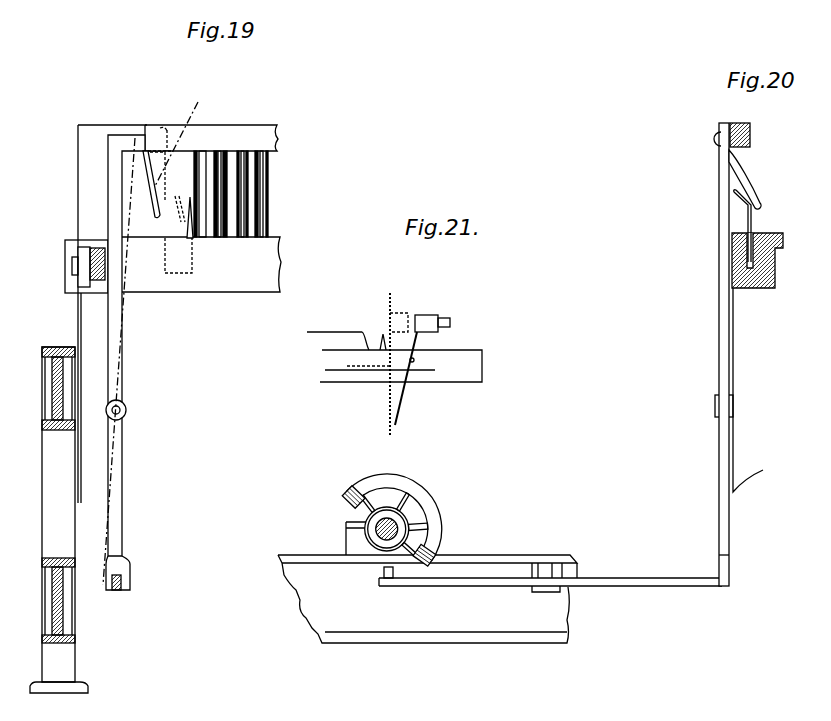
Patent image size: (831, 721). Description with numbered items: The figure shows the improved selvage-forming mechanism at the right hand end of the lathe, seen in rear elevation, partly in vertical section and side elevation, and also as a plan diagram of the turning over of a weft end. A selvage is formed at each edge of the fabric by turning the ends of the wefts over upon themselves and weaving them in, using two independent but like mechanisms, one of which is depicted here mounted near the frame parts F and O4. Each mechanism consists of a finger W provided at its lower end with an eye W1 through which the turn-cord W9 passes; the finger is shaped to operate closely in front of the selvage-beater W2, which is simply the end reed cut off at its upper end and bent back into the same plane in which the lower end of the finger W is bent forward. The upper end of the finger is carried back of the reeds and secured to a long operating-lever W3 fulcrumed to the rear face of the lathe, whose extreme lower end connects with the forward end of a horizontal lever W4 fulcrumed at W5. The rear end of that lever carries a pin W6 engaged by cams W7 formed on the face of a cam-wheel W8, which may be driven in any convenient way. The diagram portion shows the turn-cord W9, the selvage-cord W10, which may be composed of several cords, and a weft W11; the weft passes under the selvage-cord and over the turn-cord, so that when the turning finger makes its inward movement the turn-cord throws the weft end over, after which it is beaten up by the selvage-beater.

In FIG. 19, the finger W is at (180, 147).
In FIG. 21, the finger W is at (423, 343).
In FIG. 20, the finger W is at (748, 183).
In FIG. 19, the eye W1 is at (167, 184).
In FIG. 21, the eye W1 is at (415, 360).
In FIG. 21, the weft W11 is at (357, 362).
In FIG. 19, the selvage-beater W2 is at (188, 230).
In FIG. 21, the selvage-beater W2 is at (378, 342).
In FIG. 20, the selvage-beater W2 is at (755, 217).
In FIG. 19, the operating-lever W3 is at (120, 318).
In FIG. 20, the operating-lever W3 is at (718, 150).
In FIG. 19, the horizontal lever W4 is at (123, 580).
In FIG. 20, the horizontal lever W4 is at (696, 570).
In FIG. 21, the fulcrum W5 is at (542, 575).
In FIG. 21, the pin W6 is at (383, 573).
In FIG. 21, the cams W7 is at (352, 489).
In FIG. 21, the cam-wheel W8 is at (394, 512).
In FIG. 21, the turn-cord W9 is at (403, 402).
In FIG. 21, the selvage-cord W10 is at (390, 395).
In FIG. 19, the top bar O4 is at (262, 135).
In FIG. 20, the top bar O4 is at (753, 137).
In FIG. 19, the frame column F is at (57, 520).